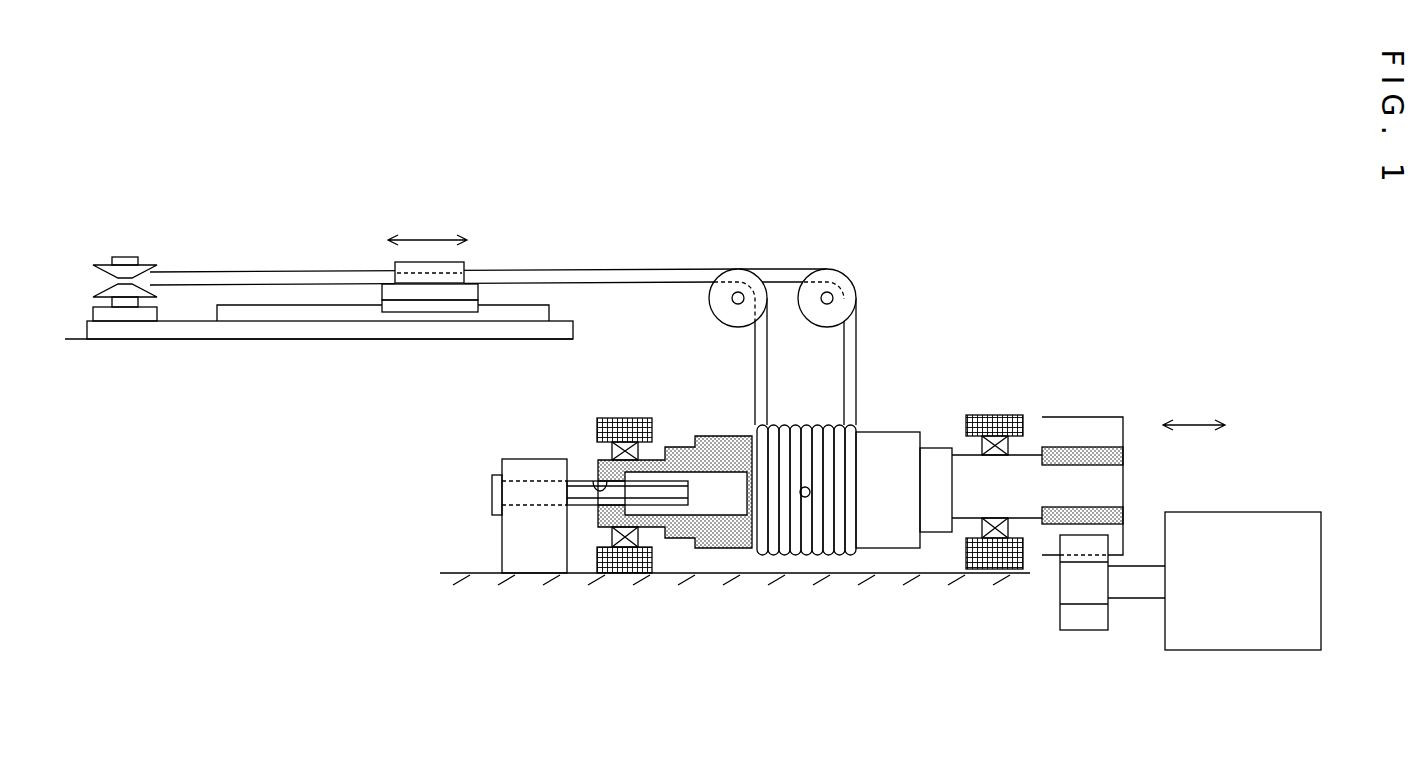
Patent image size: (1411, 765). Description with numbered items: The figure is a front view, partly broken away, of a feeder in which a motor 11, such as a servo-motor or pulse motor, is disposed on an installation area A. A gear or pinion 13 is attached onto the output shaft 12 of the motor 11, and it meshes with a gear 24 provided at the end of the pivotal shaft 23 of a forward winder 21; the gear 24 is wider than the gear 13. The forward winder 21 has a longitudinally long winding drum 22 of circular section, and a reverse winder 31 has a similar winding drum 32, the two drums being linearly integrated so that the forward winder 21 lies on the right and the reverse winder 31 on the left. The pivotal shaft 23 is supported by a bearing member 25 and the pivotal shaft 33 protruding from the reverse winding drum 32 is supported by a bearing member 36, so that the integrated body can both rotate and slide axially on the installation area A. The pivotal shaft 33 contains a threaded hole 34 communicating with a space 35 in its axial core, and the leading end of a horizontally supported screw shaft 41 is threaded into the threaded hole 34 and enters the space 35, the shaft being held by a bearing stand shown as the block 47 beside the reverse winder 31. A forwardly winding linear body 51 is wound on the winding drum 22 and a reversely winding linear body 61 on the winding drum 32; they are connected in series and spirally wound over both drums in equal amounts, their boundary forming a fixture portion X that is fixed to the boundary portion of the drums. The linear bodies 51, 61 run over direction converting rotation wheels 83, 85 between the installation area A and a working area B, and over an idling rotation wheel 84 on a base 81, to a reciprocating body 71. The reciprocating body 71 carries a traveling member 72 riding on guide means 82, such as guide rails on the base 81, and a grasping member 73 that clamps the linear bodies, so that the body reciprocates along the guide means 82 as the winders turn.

The motor 11 is at (1265, 523).
The output shaft 12 is at (1127, 590).
The gear (pinion) 13 is at (1063, 610).
The forward winder 21 is at (908, 436).
The winding drum 22 is at (877, 532).
The pivotal shaft 23 is at (973, 502).
The gear 24 is at (1068, 430).
The bearing member 25 is at (995, 433).
The reverse winder 31 is at (670, 522).
The winding drum 32 is at (735, 543).
The pivotal shaft 33 is at (607, 517).
The threaded hole 34 is at (595, 487).
The space 35 is at (715, 500).
The bearing member 36 is at (630, 557).
The screw shaft 41 is at (592, 495).
The support block 47 is at (515, 460).
The forwardly winding linear body 51 is at (250, 280).
The reversely winding linear body 61 is at (590, 277).
The reciprocating body 71 is at (465, 290).
The traveling member 72 is at (403, 306).
The grasping member 73 is at (397, 268).
The base 81 is at (183, 334).
The guide means 82 is at (262, 315).
The direction converting rotation wheel 83 is at (843, 280).
The idling rotation wheel 84 is at (142, 263).
The direction converting rotation wheel 85 is at (730, 275).
The installation area A is at (466, 573).
The working area B is at (68, 336).
The fixture portion X is at (804, 487).